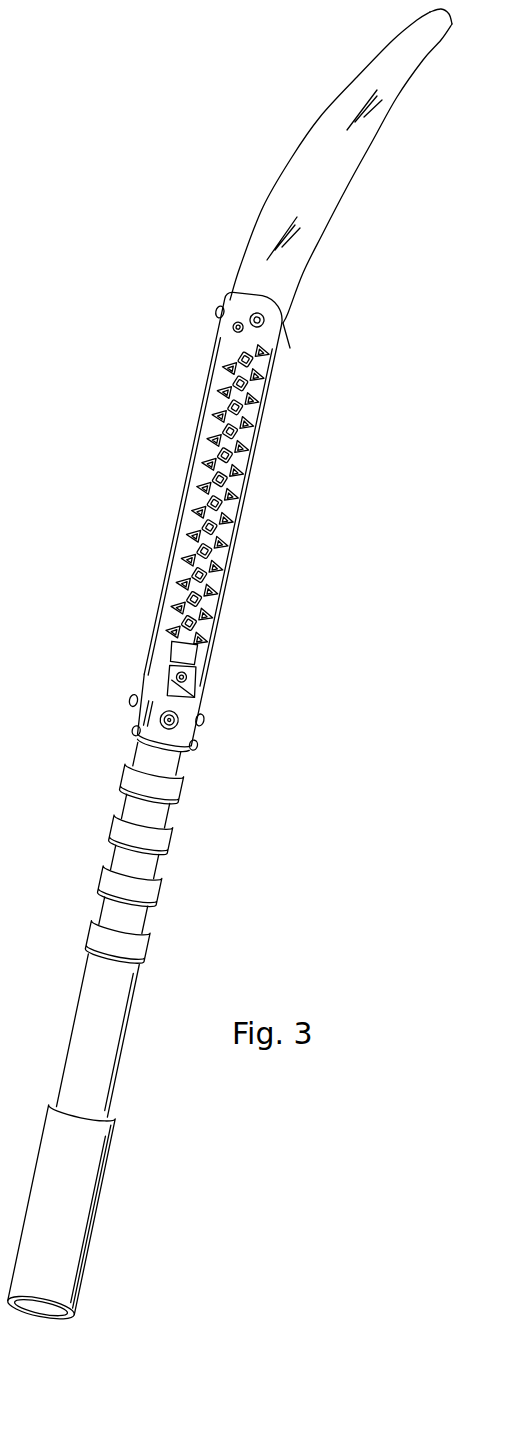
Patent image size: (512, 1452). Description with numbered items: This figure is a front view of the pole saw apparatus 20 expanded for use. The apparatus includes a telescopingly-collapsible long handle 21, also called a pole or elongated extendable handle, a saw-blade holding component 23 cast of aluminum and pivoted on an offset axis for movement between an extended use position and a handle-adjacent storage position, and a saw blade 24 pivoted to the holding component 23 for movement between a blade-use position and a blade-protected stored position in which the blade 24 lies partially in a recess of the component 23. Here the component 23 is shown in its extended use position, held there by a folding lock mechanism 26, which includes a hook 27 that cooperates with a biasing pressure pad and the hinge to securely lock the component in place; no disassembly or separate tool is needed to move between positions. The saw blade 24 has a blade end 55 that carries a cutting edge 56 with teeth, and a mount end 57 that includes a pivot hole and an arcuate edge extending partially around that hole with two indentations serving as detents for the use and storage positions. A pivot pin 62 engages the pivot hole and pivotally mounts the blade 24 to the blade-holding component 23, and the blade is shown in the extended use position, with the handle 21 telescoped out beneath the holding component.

The pole saw apparatus 20 is at (121, 393).
The telescopingly-collapsible long handle 21 is at (105, 1064).
The saw-blade holding component 23 is at (172, 518).
The saw blade 24 is at (288, 156).
The folding lock mechanism 26 is at (222, 735).
The hook 27 is at (182, 694).
The blade end 55 is at (407, 48).
The cutting edge 56 is at (347, 185).
The mount end 57 is at (248, 277).
The pivot pin 62 is at (283, 331).